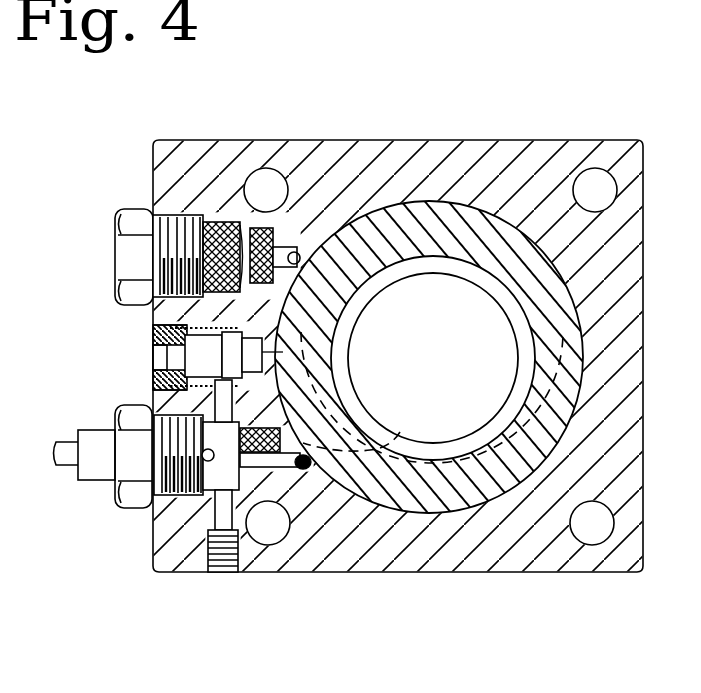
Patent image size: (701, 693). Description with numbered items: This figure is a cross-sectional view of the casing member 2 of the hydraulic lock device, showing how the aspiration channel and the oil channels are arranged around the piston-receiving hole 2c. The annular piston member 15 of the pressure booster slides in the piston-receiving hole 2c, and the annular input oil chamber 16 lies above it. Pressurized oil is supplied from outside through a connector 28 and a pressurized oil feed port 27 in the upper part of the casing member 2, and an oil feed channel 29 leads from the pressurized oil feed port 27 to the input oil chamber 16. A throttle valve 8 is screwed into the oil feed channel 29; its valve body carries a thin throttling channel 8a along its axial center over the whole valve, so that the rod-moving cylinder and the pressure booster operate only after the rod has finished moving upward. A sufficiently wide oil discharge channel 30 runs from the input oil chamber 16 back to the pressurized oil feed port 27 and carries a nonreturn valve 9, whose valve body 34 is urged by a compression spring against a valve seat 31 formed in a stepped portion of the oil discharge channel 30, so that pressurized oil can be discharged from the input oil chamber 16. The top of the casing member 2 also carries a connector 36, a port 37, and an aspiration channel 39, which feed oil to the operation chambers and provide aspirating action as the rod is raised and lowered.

The casing member 2 is at (548, 138).
The piston-receiving hole 2c is at (403, 512).
The valve seat 31 is at (262, 324).
The piston member 15 is at (478, 460).
The oil feed channel 29 is at (290, 434).
The input oil chamber 16 is at (400, 432).
The connector 36 is at (128, 252).
The port 37 is at (250, 236).
The aspiration channel 39 is at (297, 252).
The valve body 34 is at (153, 336).
The nonreturn valve 9 is at (140, 372).
The oil discharge channel 30 is at (157, 390).
The connector 28 is at (130, 498).
The pressurized oil feed port 27 is at (250, 470).
The throttling channel 8a is at (270, 412).
The throttle valve 8 is at (300, 468).